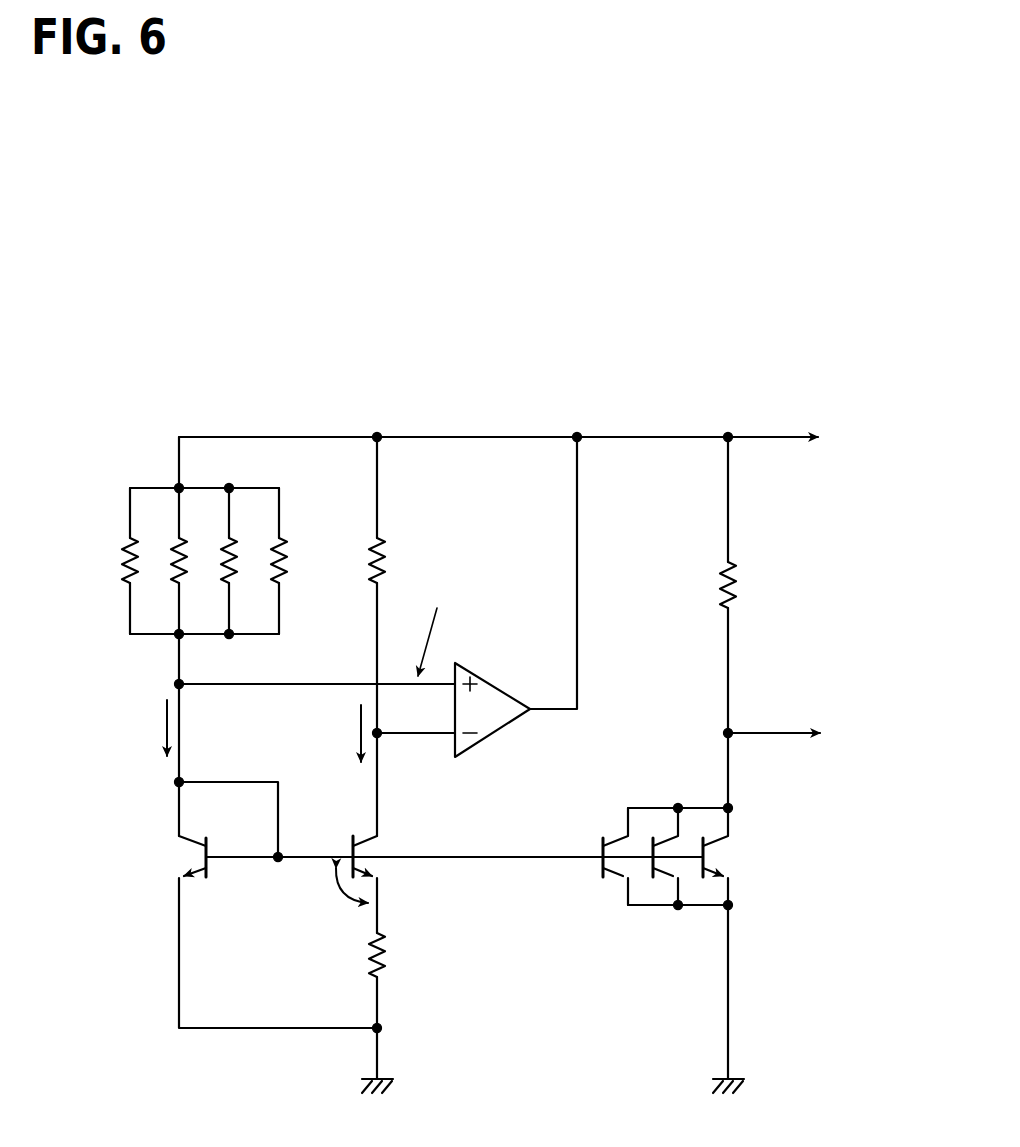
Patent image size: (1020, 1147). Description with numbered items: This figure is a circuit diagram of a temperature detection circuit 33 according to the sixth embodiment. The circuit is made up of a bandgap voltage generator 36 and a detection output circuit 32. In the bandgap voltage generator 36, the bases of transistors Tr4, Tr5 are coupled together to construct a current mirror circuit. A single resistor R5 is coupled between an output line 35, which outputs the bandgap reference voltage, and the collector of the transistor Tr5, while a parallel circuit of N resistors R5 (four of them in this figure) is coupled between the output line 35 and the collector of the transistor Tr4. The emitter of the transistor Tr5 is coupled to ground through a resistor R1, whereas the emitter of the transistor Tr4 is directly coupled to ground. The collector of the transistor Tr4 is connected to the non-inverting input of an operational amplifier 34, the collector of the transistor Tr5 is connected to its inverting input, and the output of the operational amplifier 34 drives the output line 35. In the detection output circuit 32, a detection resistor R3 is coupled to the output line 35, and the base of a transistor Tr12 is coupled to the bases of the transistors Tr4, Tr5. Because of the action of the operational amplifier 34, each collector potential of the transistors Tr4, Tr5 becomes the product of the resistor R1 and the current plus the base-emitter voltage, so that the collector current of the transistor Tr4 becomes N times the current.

The detection output circuit 32 is at (746, 428).
The temperature detection circuit 33 is at (565, 388).
The operational amplifier 34 is at (497, 689).
The output line 35 is at (634, 437).
The VBG generator 36 is at (394, 428).
The resistor R5 is at (122, 555).
The detection resistor R3 is at (735, 591).
The resistor R1 is at (366, 961).
The transistor Tr4 is at (254, 932).
The transistor Tr5 is at (385, 882).
The transistor Tr12 is at (668, 925).